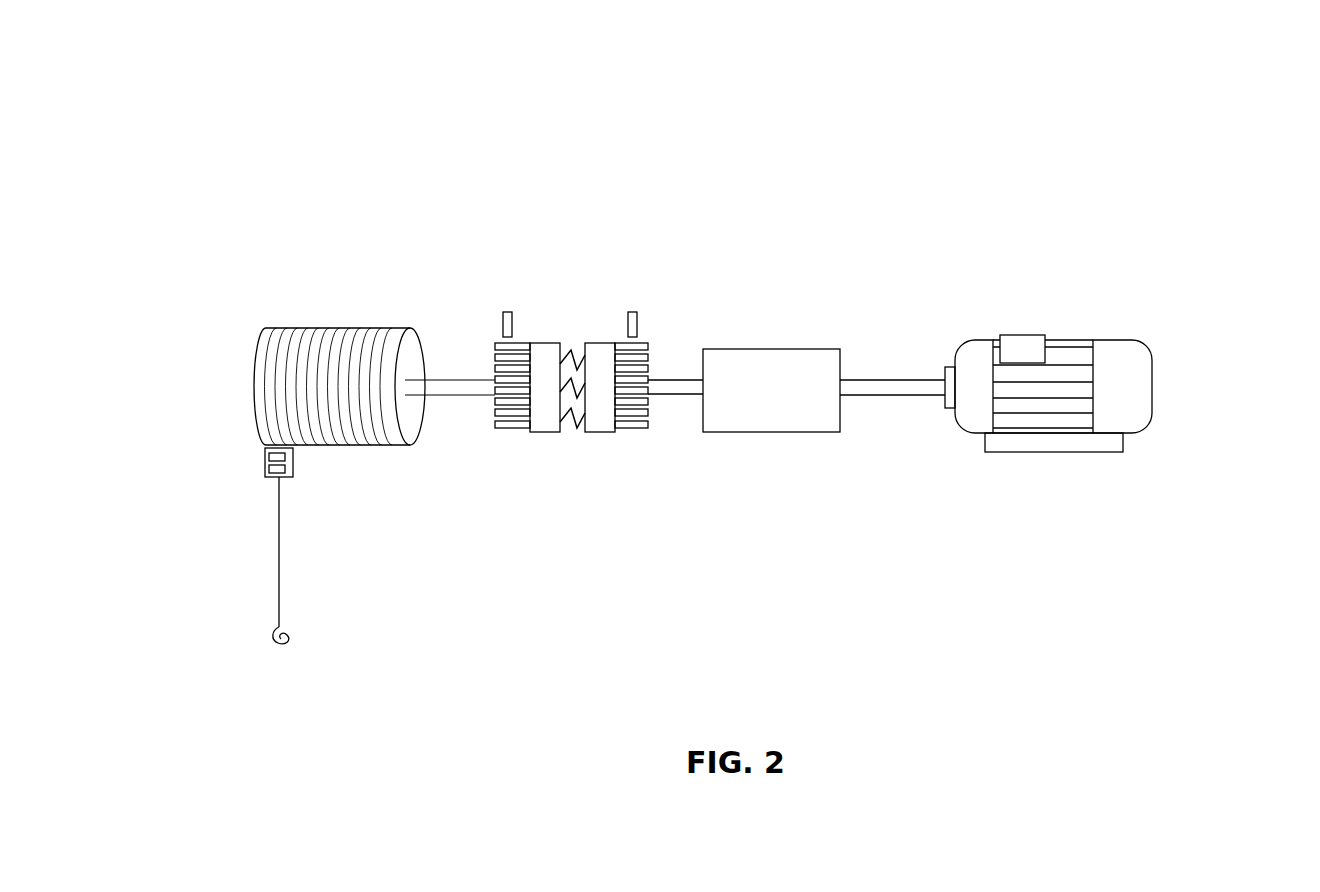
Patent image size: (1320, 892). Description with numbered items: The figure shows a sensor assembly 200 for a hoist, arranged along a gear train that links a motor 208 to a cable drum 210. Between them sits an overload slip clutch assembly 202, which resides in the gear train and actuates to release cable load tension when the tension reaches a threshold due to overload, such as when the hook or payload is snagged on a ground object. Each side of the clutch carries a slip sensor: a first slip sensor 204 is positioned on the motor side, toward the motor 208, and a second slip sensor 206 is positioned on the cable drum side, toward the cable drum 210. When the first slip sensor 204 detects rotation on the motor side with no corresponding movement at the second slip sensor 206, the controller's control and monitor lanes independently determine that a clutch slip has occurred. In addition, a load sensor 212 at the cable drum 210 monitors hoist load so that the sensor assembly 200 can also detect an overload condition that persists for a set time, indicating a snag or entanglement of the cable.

The sensor assembly 200 is at (418, 164).
The overload slip clutch assembly 202 is at (585, 288).
The first slip sensor 204 is at (640, 323).
The second slip sensor 206 is at (500, 322).
The motor 208 is at (1132, 363).
The cable drum 210 is at (266, 367).
The load sensor 212 is at (295, 472).